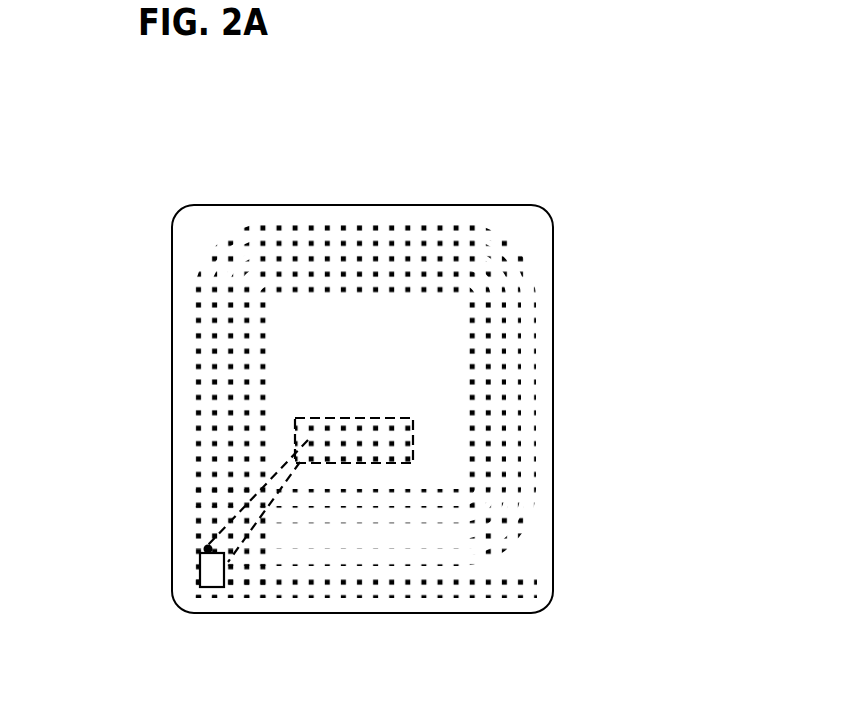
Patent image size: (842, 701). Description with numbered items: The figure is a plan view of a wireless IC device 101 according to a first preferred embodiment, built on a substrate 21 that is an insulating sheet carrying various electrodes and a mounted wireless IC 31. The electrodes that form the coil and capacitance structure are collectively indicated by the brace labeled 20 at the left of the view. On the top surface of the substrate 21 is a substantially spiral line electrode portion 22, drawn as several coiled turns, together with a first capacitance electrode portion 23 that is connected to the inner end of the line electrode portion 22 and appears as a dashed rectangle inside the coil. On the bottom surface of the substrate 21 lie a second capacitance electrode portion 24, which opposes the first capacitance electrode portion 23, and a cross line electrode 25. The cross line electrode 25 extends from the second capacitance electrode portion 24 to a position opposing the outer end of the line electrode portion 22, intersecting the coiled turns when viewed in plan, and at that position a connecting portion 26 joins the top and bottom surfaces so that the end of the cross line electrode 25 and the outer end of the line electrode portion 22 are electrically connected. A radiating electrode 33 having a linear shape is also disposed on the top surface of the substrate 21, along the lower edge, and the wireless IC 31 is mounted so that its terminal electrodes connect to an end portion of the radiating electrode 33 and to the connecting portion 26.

The wireless IC device 101 is at (507, 133).
The substrate 21 is at (543, 207).
The coil antenna 20 is at (88, 272).
The line electrode portion 22 is at (197, 308).
The first capacitance electrode portion 23 is at (350, 411).
The second capacitance electrode portion 24 is at (292, 418).
The cross line electrode 25 is at (262, 485).
The connecting portion 26 is at (200, 546).
The wireless IC 31 is at (213, 582).
The radiating electrode 33 is at (433, 590).